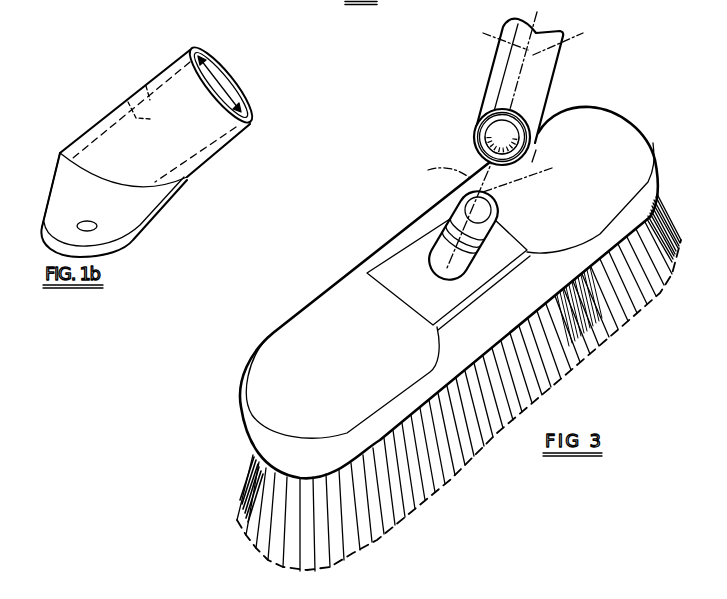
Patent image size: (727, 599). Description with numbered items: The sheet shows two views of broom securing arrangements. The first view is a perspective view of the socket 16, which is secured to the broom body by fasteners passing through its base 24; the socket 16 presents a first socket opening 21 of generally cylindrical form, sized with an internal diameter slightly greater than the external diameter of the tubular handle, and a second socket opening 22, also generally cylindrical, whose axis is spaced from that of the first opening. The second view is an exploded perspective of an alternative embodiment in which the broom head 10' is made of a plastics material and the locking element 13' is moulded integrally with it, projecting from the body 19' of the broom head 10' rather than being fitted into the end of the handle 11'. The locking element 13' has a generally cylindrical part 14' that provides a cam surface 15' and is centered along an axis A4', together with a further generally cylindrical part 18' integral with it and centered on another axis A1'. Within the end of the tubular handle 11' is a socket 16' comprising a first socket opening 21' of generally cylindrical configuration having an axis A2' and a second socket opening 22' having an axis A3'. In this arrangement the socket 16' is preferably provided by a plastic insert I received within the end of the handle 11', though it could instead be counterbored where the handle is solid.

In FIG. 1b, the socket 16 is at (48, 160).
In FIG. 1b, the first socket opening 21 is at (162, 113).
In FIG. 1b, the second socket opening 22 is at (137, 84).
In FIG. 1b, the base 24 is at (132, 221).
In FIG. 3, the broom head 10' is at (459, 320).
In FIG. 3, the handle 11' is at (535, 77).
In FIG. 3, the locking element 13' is at (432, 209).
In FIG. 3, the generally cylindrical part 14' is at (499, 223).
In FIG. 3, the cam surface 15' is at (486, 259).
In FIG. 3, the socket 16' is at (493, 114).
In FIG. 3, the further generally cylindrical part 18' is at (448, 269).
In FIG. 3, the body 19' is at (427, 292).
In FIG. 3, the first socket opening 21' is at (474, 137).
In FIG. 3, the second socket opening 22' is at (470, 123).
In FIG. 3, the axis A1' is at (530, 181).
In FIG. 3, the axis A2' is at (572, 37).
In FIG. 3, the axis A3' is at (495, 34).
In FIG. 3, the axis A4' is at (435, 173).
In FIG. 3, the plastic insert I is at (533, 162).